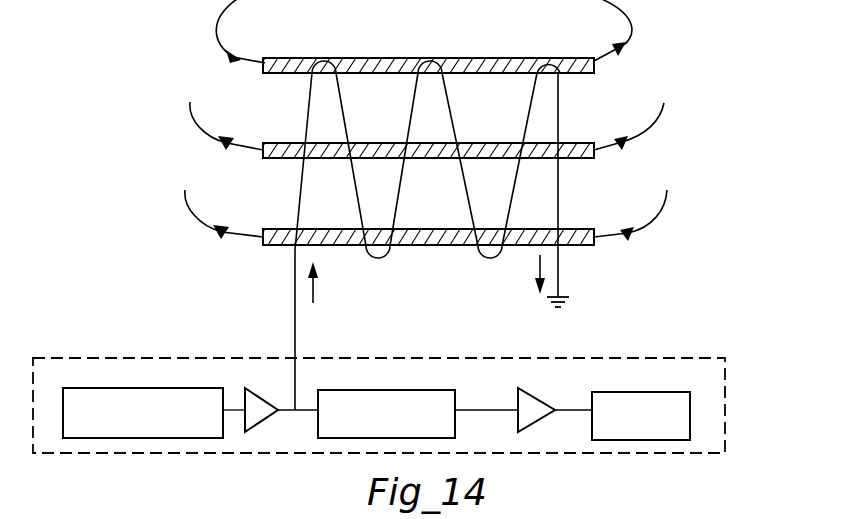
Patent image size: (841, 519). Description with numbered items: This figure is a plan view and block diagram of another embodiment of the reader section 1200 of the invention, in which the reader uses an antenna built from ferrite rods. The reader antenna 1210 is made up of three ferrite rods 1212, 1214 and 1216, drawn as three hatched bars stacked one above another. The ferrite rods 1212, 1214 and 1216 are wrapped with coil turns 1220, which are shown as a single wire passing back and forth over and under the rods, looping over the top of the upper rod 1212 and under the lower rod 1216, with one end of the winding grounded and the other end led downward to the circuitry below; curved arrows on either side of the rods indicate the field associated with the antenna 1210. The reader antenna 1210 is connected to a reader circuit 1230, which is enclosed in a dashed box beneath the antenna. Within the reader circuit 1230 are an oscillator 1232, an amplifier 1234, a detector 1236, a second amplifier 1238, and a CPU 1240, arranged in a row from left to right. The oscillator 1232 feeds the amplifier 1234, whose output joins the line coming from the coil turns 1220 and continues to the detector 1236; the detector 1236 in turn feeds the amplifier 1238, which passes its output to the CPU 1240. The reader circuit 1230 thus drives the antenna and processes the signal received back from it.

The reader section 1200 is at (188, 157).
The reader antenna 1210 is at (676, 152).
The ferrite rod 1212 is at (478, 58).
The ferrite rod 1214 is at (485, 143).
The ferrite rod 1216 is at (425, 229).
The coil turns 1220 is at (331, 47).
The reader circuit 1230 is at (450, 358).
The oscillator 1232 is at (118, 388).
The amplifier 1234 is at (273, 398).
The detector 1236 is at (436, 379).
The amplifier 1238 is at (545, 398).
The CPU 1240 is at (638, 392).